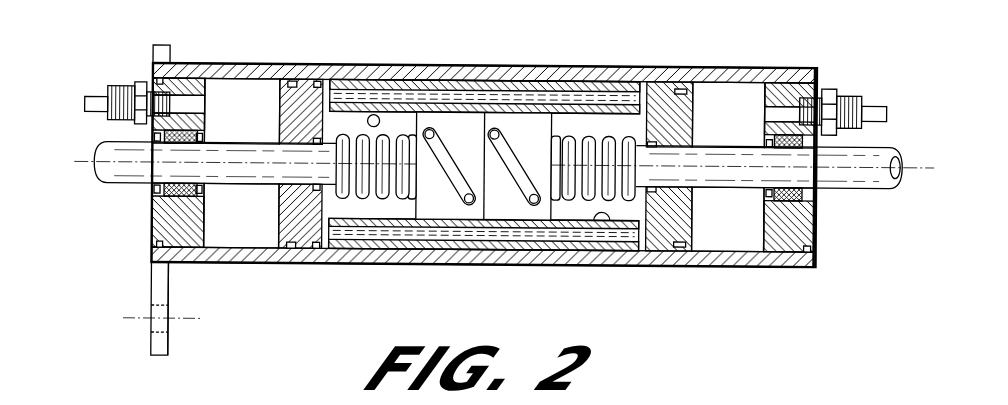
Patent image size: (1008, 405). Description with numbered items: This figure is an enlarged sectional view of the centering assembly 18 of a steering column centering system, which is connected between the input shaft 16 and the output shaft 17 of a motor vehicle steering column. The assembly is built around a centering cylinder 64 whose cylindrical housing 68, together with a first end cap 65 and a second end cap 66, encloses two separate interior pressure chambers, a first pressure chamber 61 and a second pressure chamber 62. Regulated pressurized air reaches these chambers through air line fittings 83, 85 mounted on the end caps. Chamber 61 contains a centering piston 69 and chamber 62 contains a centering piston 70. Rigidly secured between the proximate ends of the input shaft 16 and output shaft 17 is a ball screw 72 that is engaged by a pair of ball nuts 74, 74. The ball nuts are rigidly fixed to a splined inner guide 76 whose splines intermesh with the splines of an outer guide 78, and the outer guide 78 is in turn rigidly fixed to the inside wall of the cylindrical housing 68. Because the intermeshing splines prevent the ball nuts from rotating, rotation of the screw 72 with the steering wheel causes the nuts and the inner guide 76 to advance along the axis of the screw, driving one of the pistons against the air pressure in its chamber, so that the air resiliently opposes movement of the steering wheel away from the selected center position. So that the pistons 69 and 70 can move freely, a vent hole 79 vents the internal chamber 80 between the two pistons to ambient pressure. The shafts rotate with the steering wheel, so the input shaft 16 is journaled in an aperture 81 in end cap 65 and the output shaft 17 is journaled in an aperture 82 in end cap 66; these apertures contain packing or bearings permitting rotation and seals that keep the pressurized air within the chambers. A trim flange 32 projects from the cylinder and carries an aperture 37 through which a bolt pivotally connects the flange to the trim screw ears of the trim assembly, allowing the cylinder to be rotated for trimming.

The input shaft 16 is at (893, 148).
The output shaft 17 is at (103, 141).
The centering assembly 18 is at (368, 284).
The trim flange 32 is at (152, 290).
The aperture 37 is at (171, 328).
The first pressure chamber 61 is at (746, 104).
The second pressure chamber 62 is at (220, 228).
The centering cylinder 64 is at (746, 276).
The first end cap 65 is at (819, 243).
The second end cap 66 is at (152, 240).
The cylindrical housing 68 is at (705, 270).
The centering piston 69 is at (708, 106).
The centering piston 70 is at (278, 222).
The ball screw 72 is at (603, 122).
The ball nuts 74 is at (465, 110).
The splined inner guide 76 is at (606, 218).
The outer guide 78 is at (562, 250).
The vent hole 79 is at (371, 114).
The internal chamber 80 is at (398, 114).
The aperture 81 is at (819, 201).
The aperture 82 is at (153, 193).
The air line fitting 83 is at (121, 87).
The air line fitting 85 is at (853, 100).